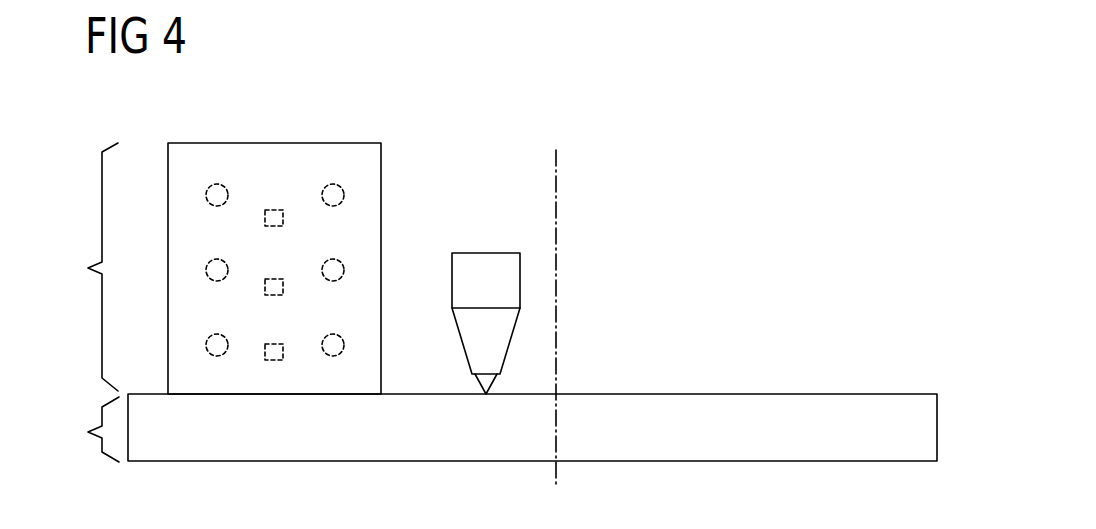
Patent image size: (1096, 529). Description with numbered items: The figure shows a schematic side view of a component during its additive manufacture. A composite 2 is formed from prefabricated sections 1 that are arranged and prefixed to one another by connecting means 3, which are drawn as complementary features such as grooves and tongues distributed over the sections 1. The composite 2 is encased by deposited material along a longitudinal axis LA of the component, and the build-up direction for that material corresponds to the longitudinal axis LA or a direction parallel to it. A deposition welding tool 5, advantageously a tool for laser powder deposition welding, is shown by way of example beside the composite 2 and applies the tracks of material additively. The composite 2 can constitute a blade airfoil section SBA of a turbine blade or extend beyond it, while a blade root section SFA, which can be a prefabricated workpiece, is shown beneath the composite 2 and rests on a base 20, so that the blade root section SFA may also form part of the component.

The section 1 is at (315, 257).
The composite 2 is at (381, 162).
The connecting means 3 is at (277, 214).
The deposition welding tool 5 is at (486, 252).
The substrate plate 20 is at (782, 393).
The longitudinal axis LA is at (556, 240).
The blade airfoil section SBA is at (76, 267).
The blade root section SFA is at (77, 429).